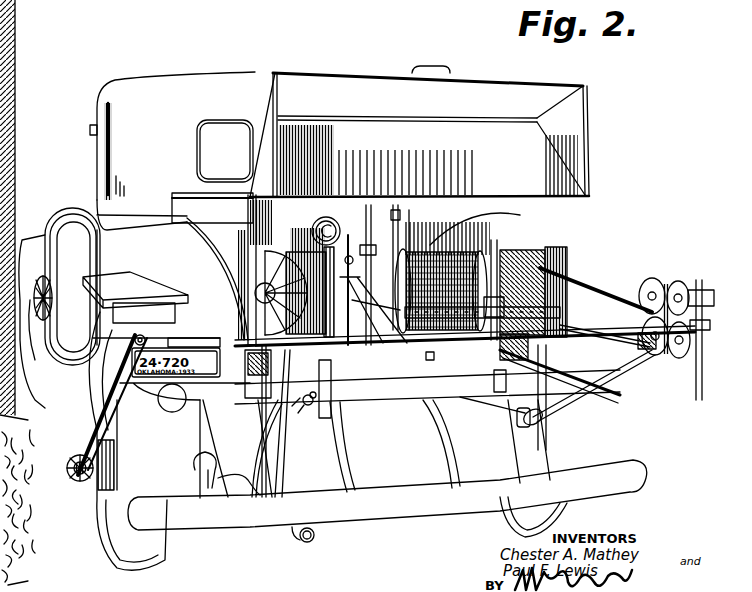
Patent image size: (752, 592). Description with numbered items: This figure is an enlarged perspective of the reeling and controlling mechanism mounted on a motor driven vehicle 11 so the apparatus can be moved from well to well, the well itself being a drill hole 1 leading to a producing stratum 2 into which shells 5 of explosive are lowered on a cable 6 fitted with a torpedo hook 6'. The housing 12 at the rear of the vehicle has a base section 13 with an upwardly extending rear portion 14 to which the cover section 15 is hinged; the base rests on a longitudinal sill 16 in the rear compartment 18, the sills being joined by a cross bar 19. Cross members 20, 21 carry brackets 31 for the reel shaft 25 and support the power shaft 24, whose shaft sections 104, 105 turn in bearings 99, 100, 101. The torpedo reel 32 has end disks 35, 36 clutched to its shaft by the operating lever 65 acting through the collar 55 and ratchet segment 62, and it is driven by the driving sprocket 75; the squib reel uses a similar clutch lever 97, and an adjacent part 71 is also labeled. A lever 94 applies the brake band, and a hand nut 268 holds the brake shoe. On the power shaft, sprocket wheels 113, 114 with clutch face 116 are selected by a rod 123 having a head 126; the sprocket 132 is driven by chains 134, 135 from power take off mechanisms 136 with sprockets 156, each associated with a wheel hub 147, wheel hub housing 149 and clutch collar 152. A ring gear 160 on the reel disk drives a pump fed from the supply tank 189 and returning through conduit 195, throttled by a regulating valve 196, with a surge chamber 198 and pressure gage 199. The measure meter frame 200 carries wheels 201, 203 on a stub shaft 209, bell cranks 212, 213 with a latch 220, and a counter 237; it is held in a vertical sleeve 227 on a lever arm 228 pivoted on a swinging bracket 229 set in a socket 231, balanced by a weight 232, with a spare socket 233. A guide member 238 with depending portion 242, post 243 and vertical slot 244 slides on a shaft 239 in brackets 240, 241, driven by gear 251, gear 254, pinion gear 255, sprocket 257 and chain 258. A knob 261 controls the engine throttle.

The drill hole 1 is at (10, 175).
The producing stratum 2 is at (8, 588).
The shells 5 is at (10, 60).
The torpedo hook 6' is at (26, 19).
The cable 6 is at (621, 283).
The motor driven vehicle 11 is at (192, 77).
The housing 12 is at (240, 195).
The base section 13 is at (363, 402).
The upwardly extending rear portion 14 is at (250, 228).
The cover section 15 is at (588, 83).
The longitudinal sill 16 is at (248, 403).
The rear compartment 18 is at (228, 272).
The cross bar 19 is at (397, 400).
The cross member 20 is at (247, 292).
The cross member 21 is at (315, 358).
The power shaft 24 is at (300, 350).
The reel shaft 25 is at (245, 306).
The bracket 31 is at (248, 322).
The torpedo reel 32 is at (507, 240).
The end disk 35 is at (455, 212).
The end disk 36 is at (548, 222).
The collar 55 is at (436, 358).
The ratchet segment 62 is at (360, 236).
The operating lever 65 is at (404, 199).
The rod 71 is at (413, 199).
The driving sprocket 75 is at (340, 252).
The lever 94 is at (439, 199).
The clutch lever 97 is at (312, 236).
The bearing 99 is at (250, 360).
The bearing 100 is at (363, 380).
The bearing 101 is at (400, 349).
The shaft section 104 is at (154, 338).
The shaft section 105 is at (590, 327).
The sprocket wheel 113 is at (393, 347).
The sprocket wheel 114 is at (400, 379).
The clutch face 116 is at (400, 362).
The rod 123 is at (365, 362).
The head 126 is at (320, 362).
The sprocket 132 is at (118, 340).
The chain 134 is at (128, 408).
The chain 135 is at (597, 412).
The power take off mechanism 136 is at (78, 478).
The wheel hub 147 is at (86, 492).
The wheel hub housing 149 is at (112, 457).
The clutch collar 152 is at (72, 452).
The sprocket 156 is at (72, 440).
The ring gear 160 is at (450, 233).
The supply tank 189 is at (538, 200).
The conduit 195 is at (455, 200).
The regulating valve 196 is at (371, 199).
The surge chamber 198 is at (352, 199).
The pressure gage 199 is at (302, 226).
The frame 200 is at (604, 305).
The wheel 201 is at (670, 262).
The wheel 203 is at (675, 270).
The stub shaft 209 is at (660, 276).
The bell crank 212 is at (640, 347).
The bell crank 213 is at (657, 367).
The latch 220 is at (608, 366).
The vertical sleeve 227 is at (690, 430).
The lever arm 228 is at (645, 410).
The swinging bracket 229 is at (542, 354).
The socket 231 is at (497, 402).
The weight 232 is at (517, 422).
The socket 233 is at (327, 420).
The counter 237 is at (703, 289).
The guide member 238 is at (520, 343).
The shaft 239 is at (462, 362).
The bracket 240 is at (423, 357).
The bracket 241 is at (573, 296).
The depending portion 242 is at (494, 380).
The post 243 is at (530, 252).
The vertical slot 244 is at (483, 224).
The gear 251 is at (566, 318).
The gear 254 is at (575, 285).
The pinion gear 255 is at (573, 275).
The sprocket 257 is at (568, 270).
The chain 258 is at (553, 258).
The knob 261 is at (285, 445).
The hand nut 268 is at (270, 423).